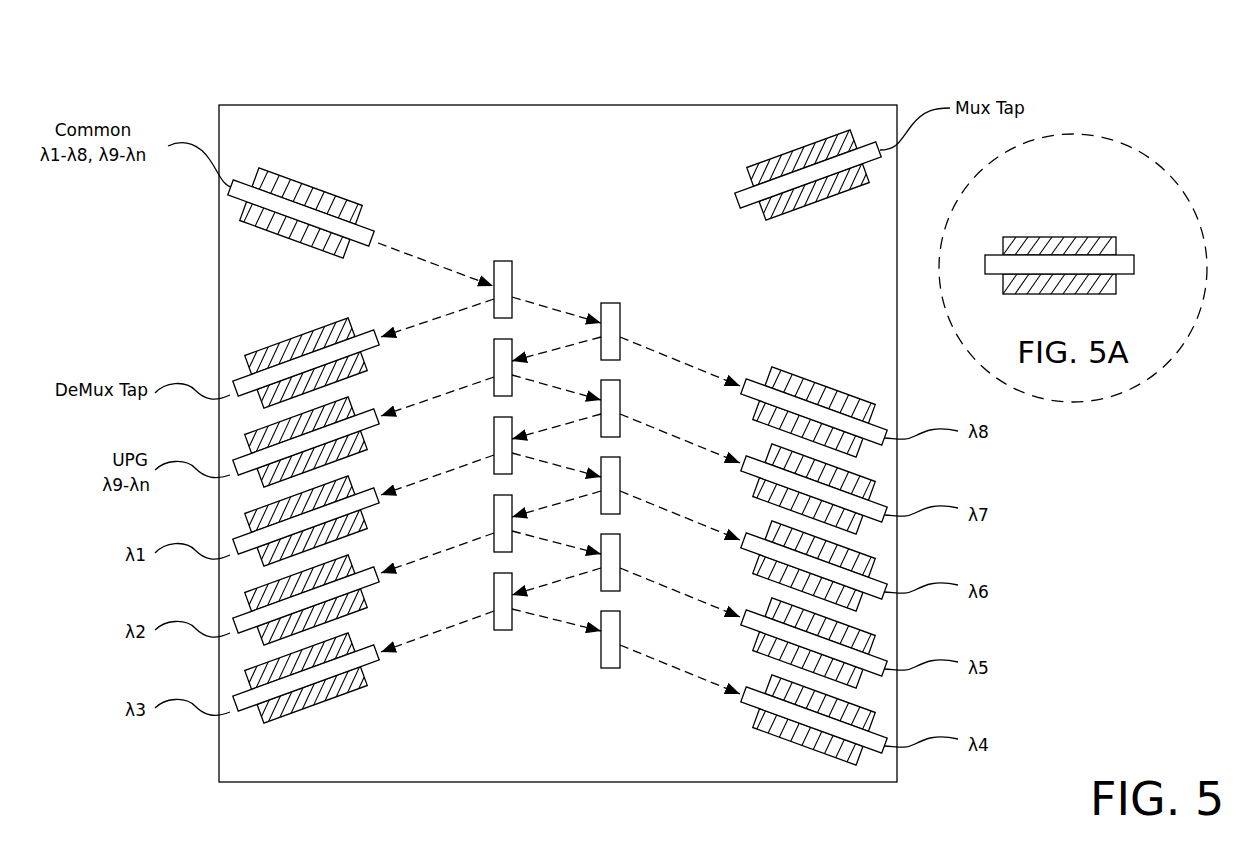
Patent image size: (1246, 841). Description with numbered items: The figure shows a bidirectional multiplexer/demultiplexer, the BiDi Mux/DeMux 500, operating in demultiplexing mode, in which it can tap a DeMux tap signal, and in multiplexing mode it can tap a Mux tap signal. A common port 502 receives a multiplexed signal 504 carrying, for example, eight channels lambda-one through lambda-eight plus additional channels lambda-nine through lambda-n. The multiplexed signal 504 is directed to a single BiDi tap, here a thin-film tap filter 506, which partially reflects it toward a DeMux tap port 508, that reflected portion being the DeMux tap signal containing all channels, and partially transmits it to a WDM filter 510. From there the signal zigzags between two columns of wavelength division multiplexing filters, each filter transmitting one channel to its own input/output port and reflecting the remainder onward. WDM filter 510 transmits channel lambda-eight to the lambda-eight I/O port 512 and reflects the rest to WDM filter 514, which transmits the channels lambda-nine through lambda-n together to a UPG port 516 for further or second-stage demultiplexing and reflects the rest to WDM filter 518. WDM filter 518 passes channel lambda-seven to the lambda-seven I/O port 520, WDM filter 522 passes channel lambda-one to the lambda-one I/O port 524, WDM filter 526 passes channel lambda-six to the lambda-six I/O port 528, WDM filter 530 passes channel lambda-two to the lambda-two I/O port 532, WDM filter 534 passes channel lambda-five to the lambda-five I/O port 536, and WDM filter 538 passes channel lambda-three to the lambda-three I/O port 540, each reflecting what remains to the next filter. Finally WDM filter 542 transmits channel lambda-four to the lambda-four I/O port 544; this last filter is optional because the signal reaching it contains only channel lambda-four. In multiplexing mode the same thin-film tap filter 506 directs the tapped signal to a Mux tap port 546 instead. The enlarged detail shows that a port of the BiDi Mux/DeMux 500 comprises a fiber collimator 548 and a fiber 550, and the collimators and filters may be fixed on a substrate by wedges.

In FIG. 5, the BiDi Mux/DeMux 500 is at (296, 66).
In FIG. 5, the common port 502 is at (346, 190).
In FIG. 5, the multiplexed signal 504 is at (403, 240).
In FIG. 5, the thin-film tap filter 506 is at (506, 258).
In FIG. 5, the DeMux tap port 508 is at (378, 326).
In FIG. 5, the WDM filter 510 is at (628, 332).
In FIG. 5, the λ8 I/O port 512 is at (748, 374).
In FIG. 5, the WDM filter 514 is at (488, 374).
In FIG. 5, the UPG port 516 is at (378, 406).
In FIG. 5, the WDM filter 518 is at (628, 409).
In FIG. 5, the λ7 I/O port 520 is at (748, 452).
In FIG. 5, the WDM filter 522 is at (488, 451).
In FIG. 5, the λ1 I/O port 524 is at (378, 485).
In FIG. 5, the WDM filter 526 is at (628, 487).
In FIG. 5, the λ6 I/O port 528 is at (748, 527).
In FIG. 5, the WDM filter 530 is at (488, 529).
In FIG. 5, the λ2 I/O port 532 is at (378, 565).
In FIG. 5, the WDM filter 534 is at (628, 565).
In FIG. 5, the λ5 I/O port 536 is at (748, 603).
In FIG. 5, the WDM filter 538 is at (488, 609).
In FIG. 5, the λ3 I/O port 540 is at (378, 643).
In FIG. 5, the WDM filter 542 is at (628, 639).
In FIG. 5, the λ4 I/O port 544 is at (748, 680).
In FIG. 5, the Mux tap port 546 is at (758, 162).
In FIG. 5A, the fiber collimator 548 is at (1068, 242).
In FIG. 5A, the fiber 550 is at (1128, 250).